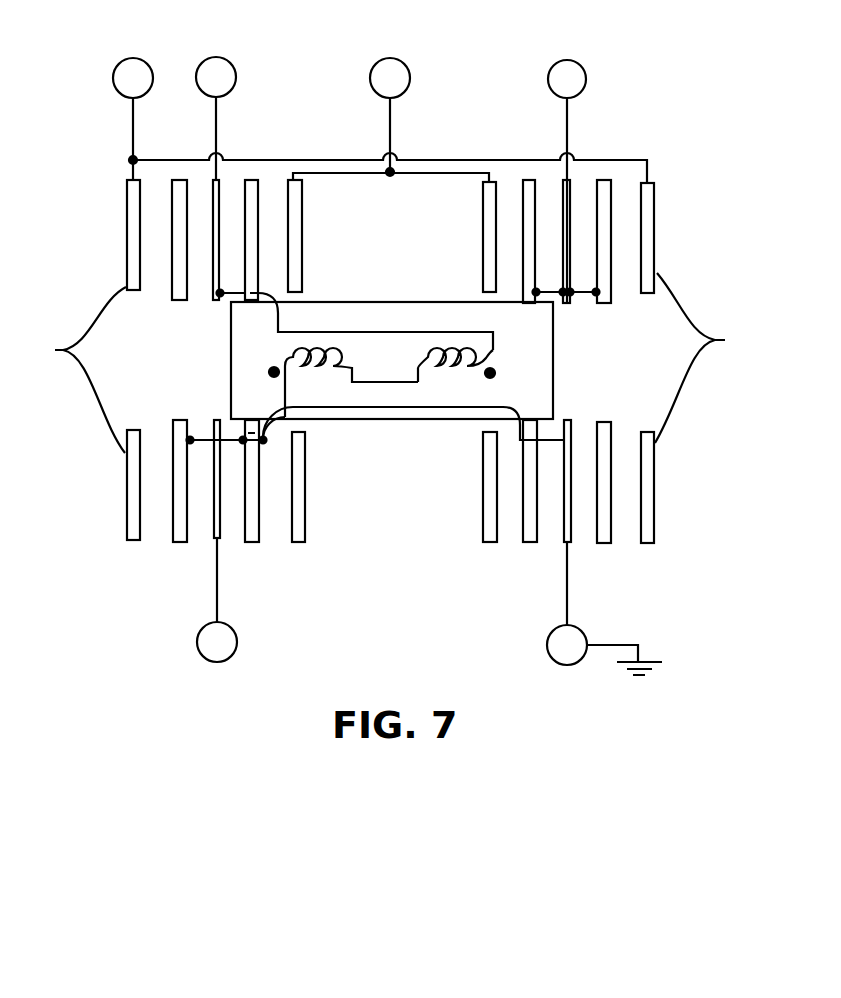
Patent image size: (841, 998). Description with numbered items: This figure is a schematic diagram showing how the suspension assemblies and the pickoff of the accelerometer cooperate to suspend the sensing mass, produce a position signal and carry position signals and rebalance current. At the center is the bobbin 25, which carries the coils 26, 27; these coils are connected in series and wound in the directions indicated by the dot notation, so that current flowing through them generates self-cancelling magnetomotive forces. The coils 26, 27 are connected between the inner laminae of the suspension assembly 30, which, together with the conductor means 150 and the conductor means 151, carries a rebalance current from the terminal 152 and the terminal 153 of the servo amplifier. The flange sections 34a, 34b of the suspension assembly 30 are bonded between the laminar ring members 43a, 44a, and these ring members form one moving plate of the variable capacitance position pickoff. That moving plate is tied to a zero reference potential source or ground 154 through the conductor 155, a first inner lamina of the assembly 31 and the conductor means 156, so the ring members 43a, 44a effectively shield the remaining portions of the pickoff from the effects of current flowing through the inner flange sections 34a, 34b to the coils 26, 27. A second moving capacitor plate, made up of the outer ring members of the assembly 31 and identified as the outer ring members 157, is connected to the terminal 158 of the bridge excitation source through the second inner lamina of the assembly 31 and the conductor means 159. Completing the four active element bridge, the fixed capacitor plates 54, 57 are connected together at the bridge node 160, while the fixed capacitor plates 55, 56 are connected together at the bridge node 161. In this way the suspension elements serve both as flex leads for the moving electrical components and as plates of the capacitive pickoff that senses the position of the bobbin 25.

The bobbin 25 is at (553, 348).
The coil 26 is at (313, 365).
The coil 27 is at (457, 365).
The suspension assembly 30 is at (247, 143).
The assembly 31 is at (587, 127).
The flange section 34a is at (219, 192).
The flange section 34b is at (220, 540).
The laminar ring member 43a is at (172, 250).
The laminar ring member 44a is at (258, 237).
The fixed capacitor plate 54 is at (78, 370).
The fixed capacitor plate 55 is at (302, 203).
The fixed capacitor plate 56 is at (483, 206).
The fixed capacitor plate 57 is at (707, 358).
The conductor means 150 is at (216, 120).
The conductor means 151 is at (217, 588).
The terminal 152 is at (235, 63).
The terminal 153 is at (200, 654).
The ground 154 is at (562, 665).
The conductor 155 is at (400, 408).
The conductor means 156 is at (567, 608).
The outer ring members 157 is at (535, 232).
The terminal 158 is at (587, 65).
The conductor means 159 is at (567, 117).
The bridge node 160 is at (118, 65).
The bridge node 161 is at (407, 63).